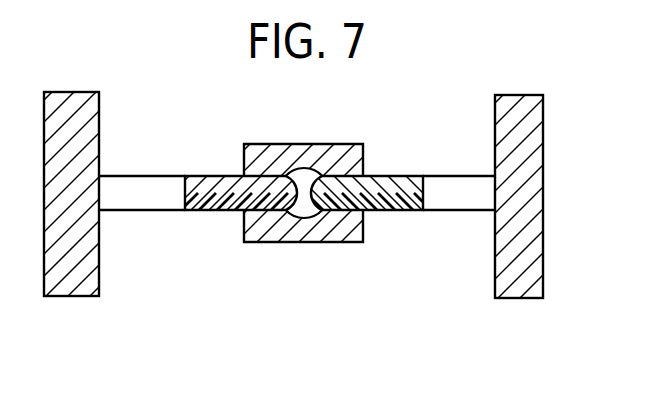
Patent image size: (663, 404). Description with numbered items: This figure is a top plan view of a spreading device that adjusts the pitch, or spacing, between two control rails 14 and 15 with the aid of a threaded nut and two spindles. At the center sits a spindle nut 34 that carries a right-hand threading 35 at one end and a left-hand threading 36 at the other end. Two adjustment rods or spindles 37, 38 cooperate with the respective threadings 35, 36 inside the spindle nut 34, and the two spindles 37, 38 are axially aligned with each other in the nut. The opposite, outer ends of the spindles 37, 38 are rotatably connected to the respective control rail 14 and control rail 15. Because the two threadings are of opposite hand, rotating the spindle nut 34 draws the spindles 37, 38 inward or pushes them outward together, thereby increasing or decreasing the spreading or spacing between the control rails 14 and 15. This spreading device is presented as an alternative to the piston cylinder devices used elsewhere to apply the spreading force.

The control rail 14 is at (66, 283).
The control rail 15 is at (518, 284).
The spindle nut 34 is at (309, 158).
The right-hand threading 35 is at (352, 182).
The left-hand threading 36 is at (266, 187).
The adjustment spindle 37 is at (134, 197).
The adjustment spindle 38 is at (441, 197).